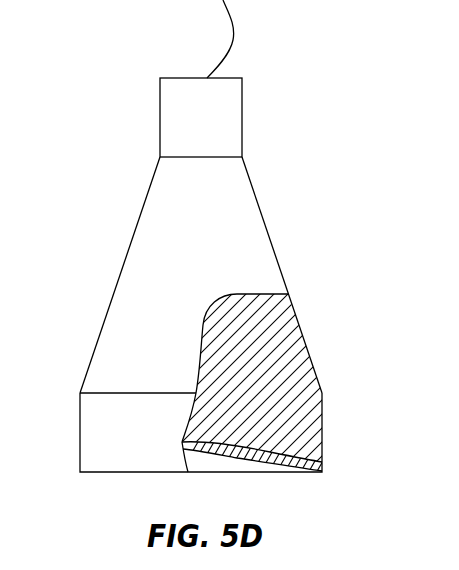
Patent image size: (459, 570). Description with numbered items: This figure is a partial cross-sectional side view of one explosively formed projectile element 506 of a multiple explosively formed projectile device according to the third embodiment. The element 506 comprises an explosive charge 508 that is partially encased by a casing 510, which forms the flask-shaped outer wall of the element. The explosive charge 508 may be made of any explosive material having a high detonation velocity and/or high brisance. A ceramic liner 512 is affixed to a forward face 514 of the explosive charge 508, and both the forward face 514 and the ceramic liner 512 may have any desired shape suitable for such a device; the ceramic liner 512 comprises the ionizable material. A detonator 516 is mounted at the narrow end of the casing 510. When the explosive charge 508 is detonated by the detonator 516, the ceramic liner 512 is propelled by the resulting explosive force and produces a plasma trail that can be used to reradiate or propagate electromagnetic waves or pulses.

The explosively formed projectile element 506 is at (115, 181).
The explosive charge 508 is at (299, 354).
The casing 510 is at (125, 320).
The ceramic liner 512 is at (277, 450).
The forward face 514 is at (322, 452).
The detonator 516 is at (180, 105).